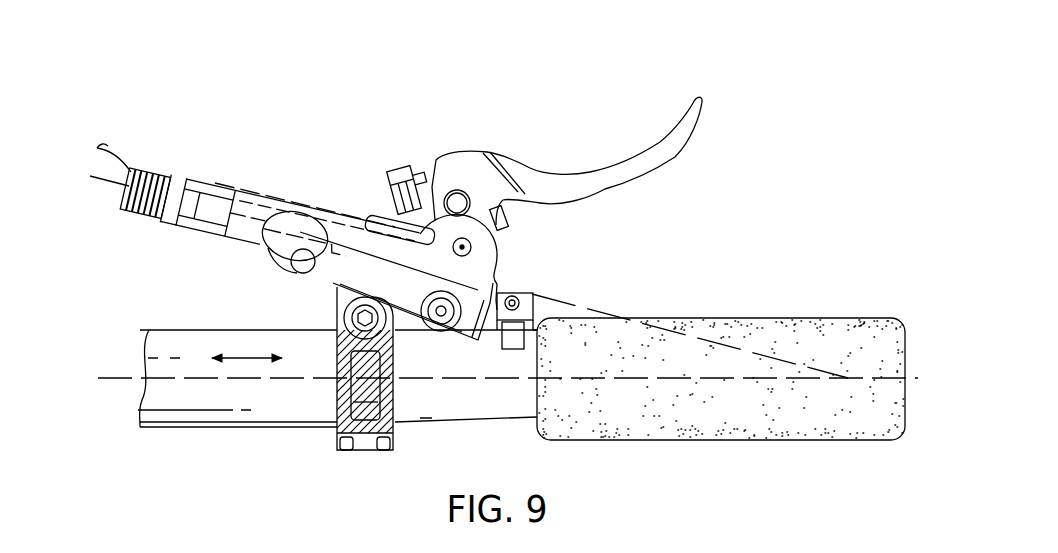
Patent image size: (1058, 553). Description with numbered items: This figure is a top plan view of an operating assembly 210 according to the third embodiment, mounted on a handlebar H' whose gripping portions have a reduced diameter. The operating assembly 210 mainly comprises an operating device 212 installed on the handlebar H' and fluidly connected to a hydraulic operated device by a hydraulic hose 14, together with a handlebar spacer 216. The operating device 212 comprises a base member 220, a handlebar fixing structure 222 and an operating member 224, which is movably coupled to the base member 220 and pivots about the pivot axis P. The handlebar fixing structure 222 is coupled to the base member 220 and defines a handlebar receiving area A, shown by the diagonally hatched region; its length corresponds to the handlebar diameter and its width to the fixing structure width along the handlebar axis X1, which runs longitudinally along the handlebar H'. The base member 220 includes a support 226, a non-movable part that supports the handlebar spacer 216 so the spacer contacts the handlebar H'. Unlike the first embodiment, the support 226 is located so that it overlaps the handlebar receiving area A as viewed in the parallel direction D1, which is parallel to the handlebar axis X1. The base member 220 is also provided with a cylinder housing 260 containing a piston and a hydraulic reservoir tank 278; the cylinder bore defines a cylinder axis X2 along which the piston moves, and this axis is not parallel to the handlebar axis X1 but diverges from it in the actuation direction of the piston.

The operating assembly 210 is at (235, 92).
The hydraulic hose 14 is at (122, 172).
The operating device 212 is at (285, 188).
The cylinder housing 260 is at (323, 208).
The base member 220 is at (385, 222).
The operating member 224 is at (599, 160).
The hydraulic reservoir tank 278 is at (299, 274).
The handlebar fixing structure 222 is at (333, 443).
The handlebar spacer 216 is at (503, 358).
The support 226 is at (540, 300).
The pivot axis P is at (471, 245).
The handlebar axis X1 is at (118, 377).
The cylinder axis X2 is at (208, 197).
The parallel direction D1 is at (254, 356).
The handlebar H' is at (152, 447).
The handlebar receiving area A is at (372, 390).